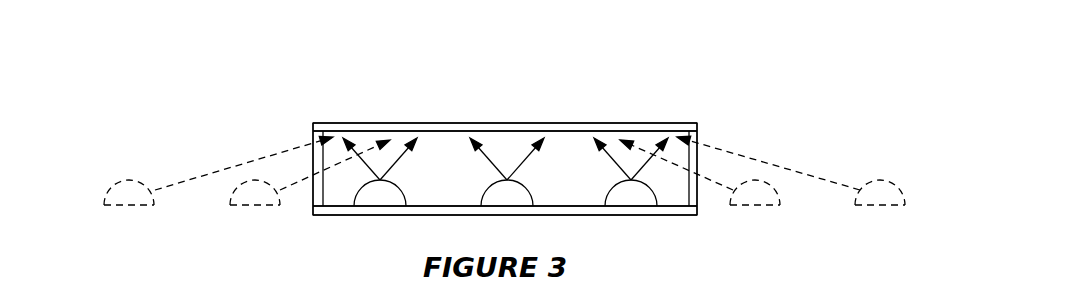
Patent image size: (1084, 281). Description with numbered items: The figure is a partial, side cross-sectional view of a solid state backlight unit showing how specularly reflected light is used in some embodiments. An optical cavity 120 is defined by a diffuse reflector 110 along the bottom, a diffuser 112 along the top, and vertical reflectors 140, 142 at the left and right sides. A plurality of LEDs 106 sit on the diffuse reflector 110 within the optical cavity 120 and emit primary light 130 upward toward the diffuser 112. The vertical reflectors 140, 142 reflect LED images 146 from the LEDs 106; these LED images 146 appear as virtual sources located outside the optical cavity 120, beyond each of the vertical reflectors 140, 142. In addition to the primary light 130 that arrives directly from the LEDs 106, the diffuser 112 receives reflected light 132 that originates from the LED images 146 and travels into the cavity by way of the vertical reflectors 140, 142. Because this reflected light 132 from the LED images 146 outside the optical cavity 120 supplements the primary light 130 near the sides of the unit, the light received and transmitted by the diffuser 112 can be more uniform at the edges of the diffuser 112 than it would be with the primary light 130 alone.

The LEDs 106 is at (505, 195).
The diffuse reflector 110 is at (390, 210).
The diffuser 112 is at (630, 128).
The optical cavity 120 is at (443, 143).
The primary light 130 is at (403, 133).
The reflected light 132 is at (287, 152).
The vertical reflector 140 is at (317, 193).
The vertical reflector 142 is at (695, 198).
The LED images 146 is at (128, 195).